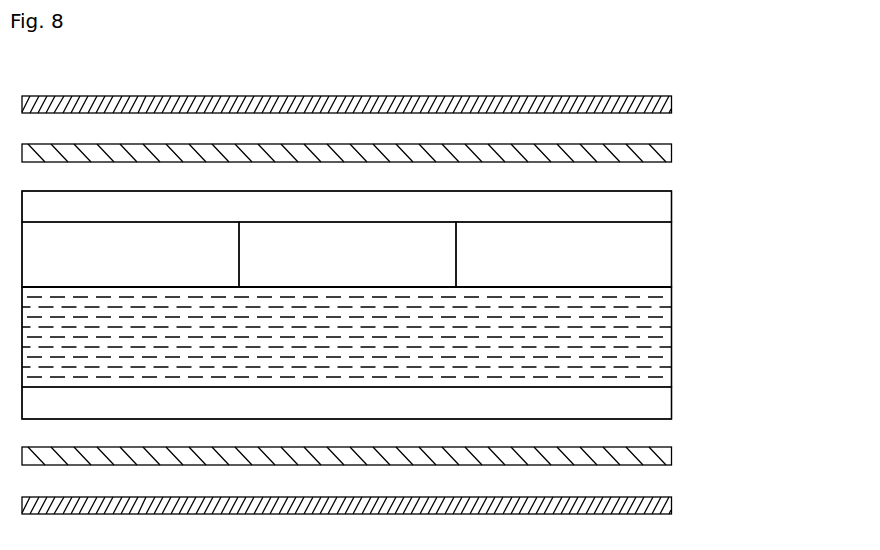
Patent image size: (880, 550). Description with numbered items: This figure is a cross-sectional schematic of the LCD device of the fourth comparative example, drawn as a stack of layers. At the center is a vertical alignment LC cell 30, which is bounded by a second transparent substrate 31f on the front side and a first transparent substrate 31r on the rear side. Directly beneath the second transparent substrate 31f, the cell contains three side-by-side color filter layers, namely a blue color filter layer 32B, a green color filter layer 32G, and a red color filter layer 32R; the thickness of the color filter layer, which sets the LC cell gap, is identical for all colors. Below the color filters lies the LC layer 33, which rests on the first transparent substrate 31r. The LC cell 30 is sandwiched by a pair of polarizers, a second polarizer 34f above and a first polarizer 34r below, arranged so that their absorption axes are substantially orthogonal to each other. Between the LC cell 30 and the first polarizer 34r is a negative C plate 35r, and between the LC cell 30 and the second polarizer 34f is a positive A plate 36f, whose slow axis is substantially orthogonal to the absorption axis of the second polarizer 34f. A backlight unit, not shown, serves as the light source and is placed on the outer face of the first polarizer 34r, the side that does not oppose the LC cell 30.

The LC cell 30 is at (405, 239).
The second transparent substrate 31f is at (663, 209).
The first transparent substrate 31r is at (379, 404).
The blue color filter layer 32B is at (132, 237).
The green color filter layer 32G is at (343, 237).
The red color filter layer 32R is at (566, 237).
The LC layer 33 is at (663, 318).
The second polarizer 34f is at (671, 103).
The first polarizer 34r is at (671, 505).
The negative C plate 35r is at (671, 455).
The positive A plate 36f is at (671, 151).